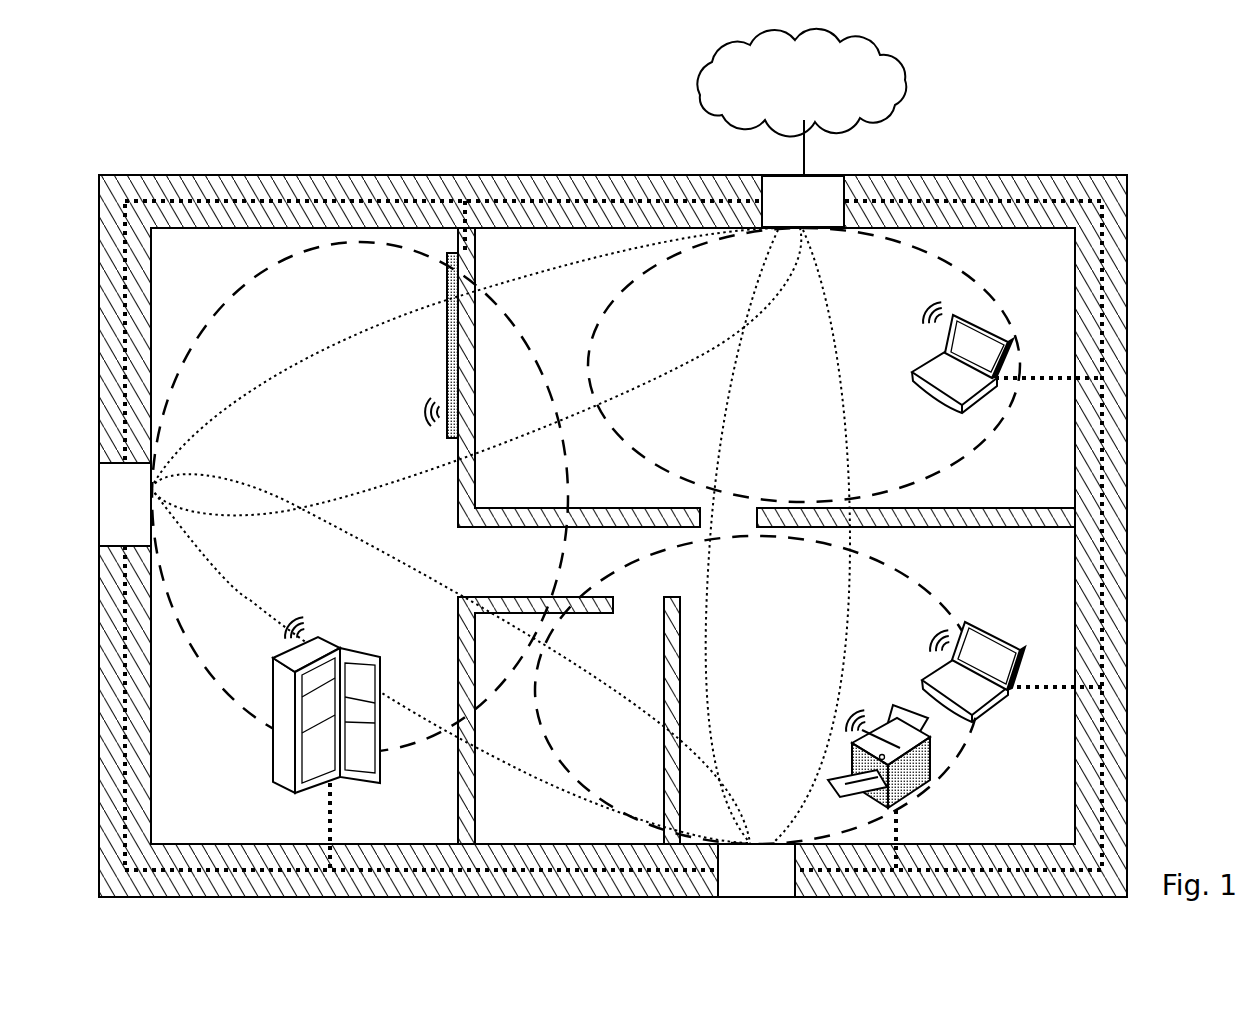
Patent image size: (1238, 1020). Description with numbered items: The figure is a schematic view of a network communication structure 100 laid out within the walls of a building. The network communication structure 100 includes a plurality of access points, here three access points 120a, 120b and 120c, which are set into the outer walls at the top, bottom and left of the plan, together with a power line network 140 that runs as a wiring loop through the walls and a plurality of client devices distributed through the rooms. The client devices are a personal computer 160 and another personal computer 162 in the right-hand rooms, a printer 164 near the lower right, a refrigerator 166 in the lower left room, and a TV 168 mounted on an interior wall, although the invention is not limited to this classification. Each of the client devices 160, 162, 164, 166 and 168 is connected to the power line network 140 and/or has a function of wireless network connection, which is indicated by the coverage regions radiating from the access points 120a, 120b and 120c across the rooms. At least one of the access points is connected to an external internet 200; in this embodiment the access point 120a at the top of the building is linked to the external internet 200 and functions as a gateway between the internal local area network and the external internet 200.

The network communication structure 100 is at (388, 126).
The power line network 140 is at (960, 196).
The external internet 200 is at (801, 102).
The access point 120a is at (804, 509).
The access point 120b is at (757, 716).
The access point 120c is at (450, 535).
The client device 160 is at (980, 320).
The client device 162 is at (983, 623).
The client device 164 is at (932, 763).
The client device 166 is at (330, 643).
The client device 168 is at (447, 346).